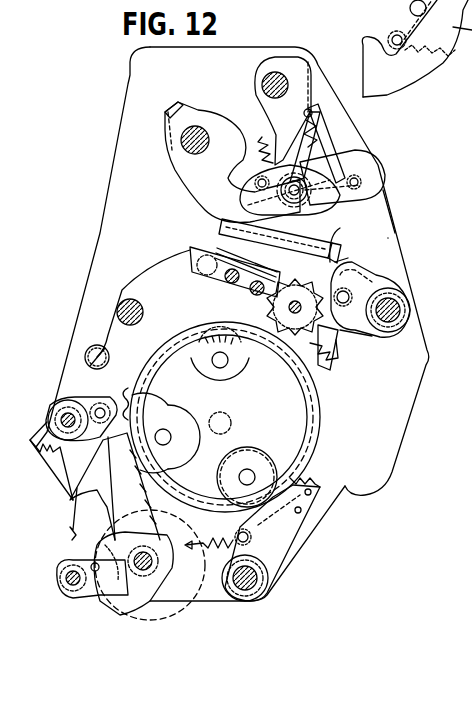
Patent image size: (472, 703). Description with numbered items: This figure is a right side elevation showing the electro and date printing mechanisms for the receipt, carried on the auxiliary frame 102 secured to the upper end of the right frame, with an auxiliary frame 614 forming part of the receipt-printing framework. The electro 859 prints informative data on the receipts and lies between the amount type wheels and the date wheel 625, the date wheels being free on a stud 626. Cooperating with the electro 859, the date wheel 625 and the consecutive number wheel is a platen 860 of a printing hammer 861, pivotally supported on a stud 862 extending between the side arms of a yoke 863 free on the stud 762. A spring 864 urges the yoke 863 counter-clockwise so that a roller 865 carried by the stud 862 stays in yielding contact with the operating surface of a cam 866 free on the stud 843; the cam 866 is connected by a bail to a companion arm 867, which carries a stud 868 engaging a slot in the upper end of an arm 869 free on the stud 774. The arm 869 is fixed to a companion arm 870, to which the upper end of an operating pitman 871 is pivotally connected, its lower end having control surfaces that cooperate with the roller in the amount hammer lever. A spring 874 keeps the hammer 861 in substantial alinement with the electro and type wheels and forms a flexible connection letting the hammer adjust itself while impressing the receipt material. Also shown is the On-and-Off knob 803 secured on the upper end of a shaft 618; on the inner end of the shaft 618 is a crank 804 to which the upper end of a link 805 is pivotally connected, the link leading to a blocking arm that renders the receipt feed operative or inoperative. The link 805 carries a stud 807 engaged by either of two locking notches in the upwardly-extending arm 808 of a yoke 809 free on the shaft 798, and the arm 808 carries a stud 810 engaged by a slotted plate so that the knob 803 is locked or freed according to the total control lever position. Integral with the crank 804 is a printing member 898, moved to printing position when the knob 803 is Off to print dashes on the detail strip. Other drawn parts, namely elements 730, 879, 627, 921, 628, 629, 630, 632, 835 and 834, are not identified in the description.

The auxiliary frame 102 is at (125, 128).
The stud 843 is at (266, 79).
The yoke 863 is at (178, 106).
The stud 762 is at (192, 127).
The spring 864 is at (258, 133).
The roller 865 is at (270, 163).
The spring 874 is at (312, 118).
The companion arm 867 is at (333, 150).
The stud 862 is at (332, 165).
The cam 866 is at (340, 176).
The stud 868 is at (362, 186).
The printing hammer 861 is at (336, 240).
The platen 860 is at (390, 236).
The arm 869 is at (390, 250).
The companion arm 870 is at (363, 265).
The stud 774 is at (397, 303).
The lever 730 is at (363, 325).
The operating pitman 871 is at (346, 338).
The date wheels 625 is at (306, 353).
The slide bar 879 is at (330, 265).
The electro 859 is at (227, 238).
The auxiliary frame 614 is at (153, 276).
The gear 627 is at (195, 360).
The stud 626 is at (268, 308).
The crank 804 is at (108, 362).
The On-and-Off knob 803 is at (55, 405).
The shaft 618 is at (90, 378).
The rack teeth 921 is at (127, 398).
The gear 628 is at (185, 414).
The stud 807 is at (123, 468).
The upwardly-extending arm 808 is at (157, 491).
The gear 629 is at (243, 453).
The teeth 630 is at (300, 474).
The lever 632 is at (277, 540).
The shaft 798 is at (148, 568).
The stud 810 is at (103, 525).
The link 805 is at (92, 500).
The printing member 898 is at (45, 462).
The yoke 809 is at (123, 621).
The pin 835 is at (410, 8).
The pivot 834 is at (394, 35).